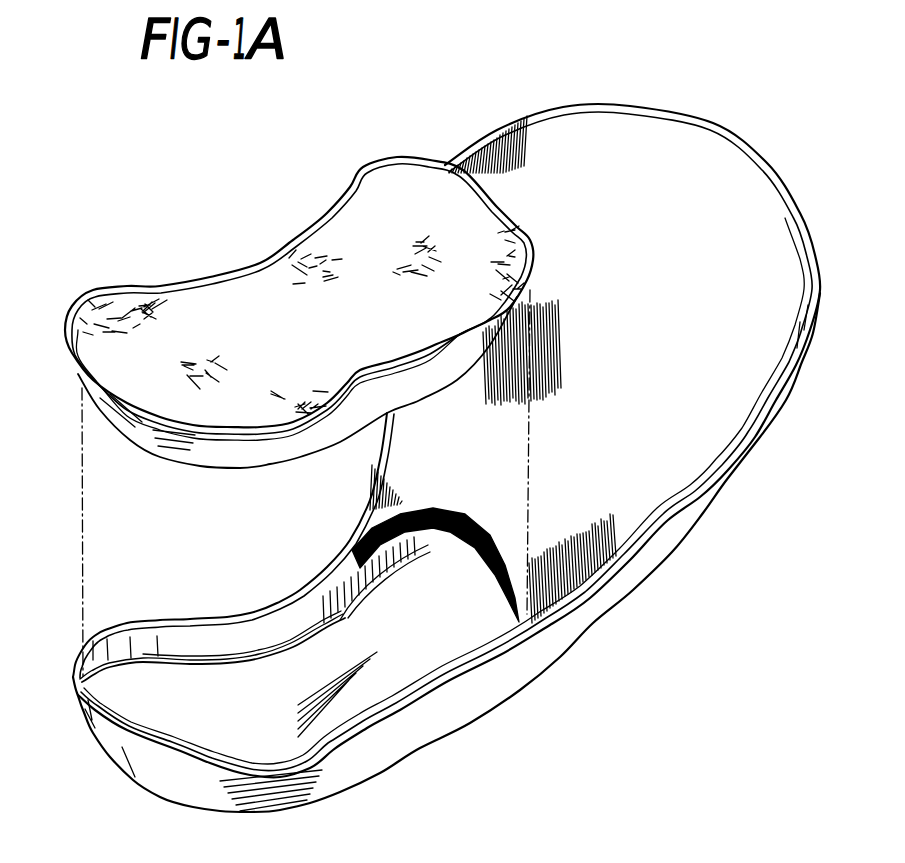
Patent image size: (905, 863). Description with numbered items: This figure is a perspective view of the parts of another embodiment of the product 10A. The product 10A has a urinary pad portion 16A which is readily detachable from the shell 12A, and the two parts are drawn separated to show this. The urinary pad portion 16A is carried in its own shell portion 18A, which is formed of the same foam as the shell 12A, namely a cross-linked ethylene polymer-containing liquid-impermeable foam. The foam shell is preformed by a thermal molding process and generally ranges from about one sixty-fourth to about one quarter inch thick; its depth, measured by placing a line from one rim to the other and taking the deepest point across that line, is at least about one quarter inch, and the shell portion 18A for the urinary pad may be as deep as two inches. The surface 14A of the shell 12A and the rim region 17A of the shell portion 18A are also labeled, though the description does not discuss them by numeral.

The product 10A is at (716, 128).
The shell 12A is at (633, 557).
The upper surface of base 14A is at (658, 349).
The urinary pad portion 16A is at (300, 349).
The rim edge of pad 17A is at (131, 310).
The shell portion for the urinary pad 18A is at (350, 187).